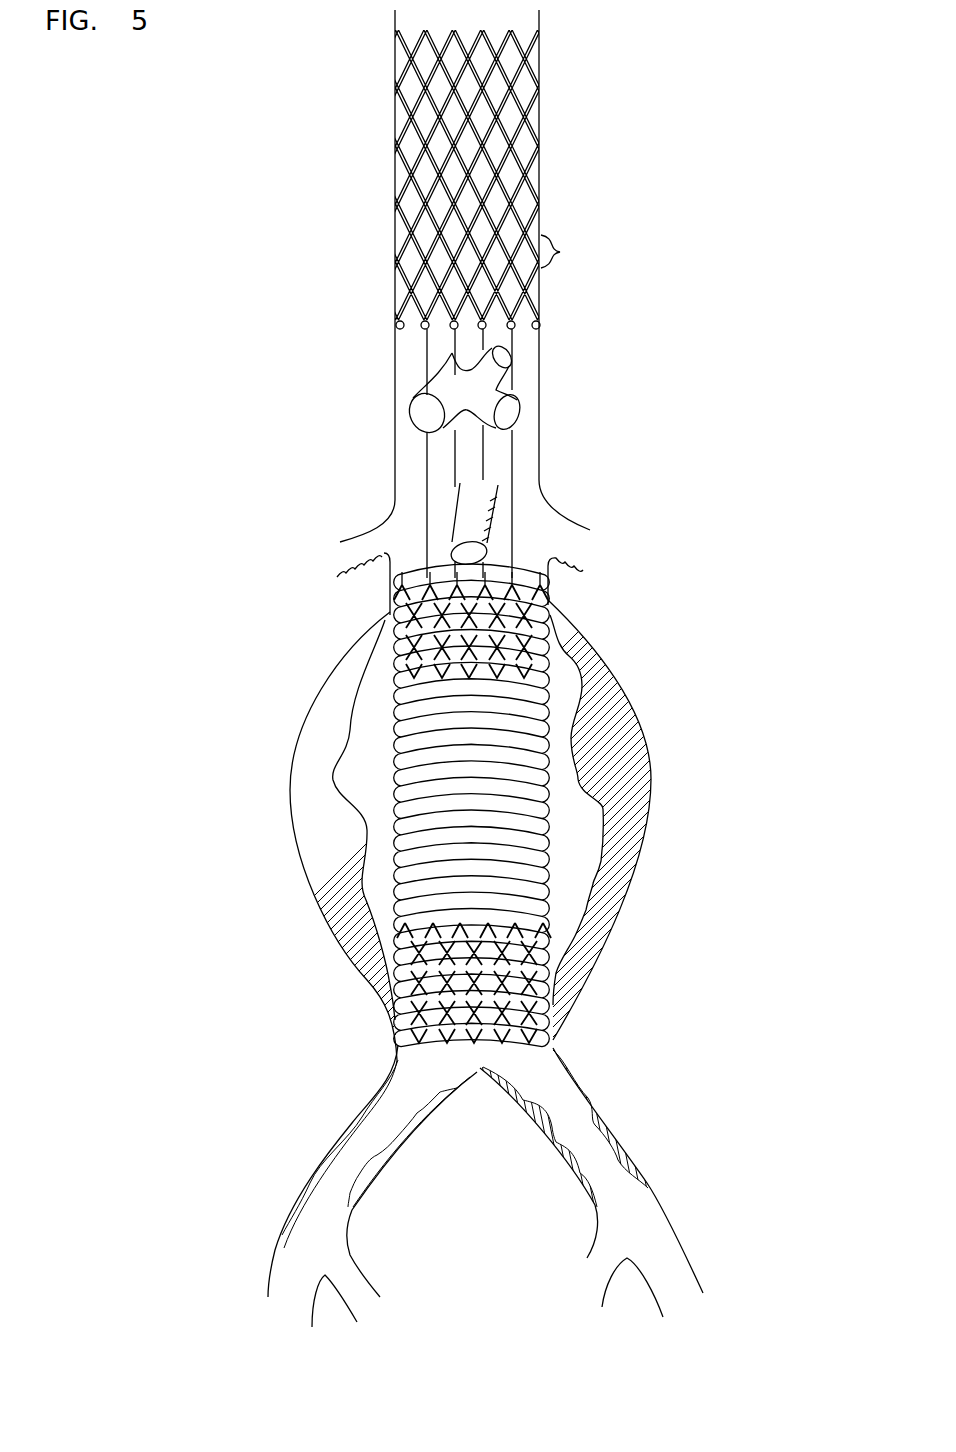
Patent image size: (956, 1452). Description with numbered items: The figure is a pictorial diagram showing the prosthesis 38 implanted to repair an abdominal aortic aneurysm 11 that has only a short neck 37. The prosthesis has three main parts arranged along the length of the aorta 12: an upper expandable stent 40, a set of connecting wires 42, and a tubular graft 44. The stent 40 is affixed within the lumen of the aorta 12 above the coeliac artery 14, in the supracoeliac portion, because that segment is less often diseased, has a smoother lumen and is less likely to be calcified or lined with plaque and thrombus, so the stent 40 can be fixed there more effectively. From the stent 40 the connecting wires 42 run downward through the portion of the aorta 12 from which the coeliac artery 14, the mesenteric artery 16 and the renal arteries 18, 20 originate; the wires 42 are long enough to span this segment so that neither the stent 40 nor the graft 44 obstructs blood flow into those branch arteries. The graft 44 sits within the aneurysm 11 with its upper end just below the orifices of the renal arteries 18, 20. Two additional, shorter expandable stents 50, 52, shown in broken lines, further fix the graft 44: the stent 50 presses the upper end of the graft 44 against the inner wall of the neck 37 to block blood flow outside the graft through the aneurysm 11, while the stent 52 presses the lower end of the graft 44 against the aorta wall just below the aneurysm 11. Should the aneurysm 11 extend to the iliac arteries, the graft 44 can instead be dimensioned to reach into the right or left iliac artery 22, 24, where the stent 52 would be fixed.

The abdominal aortic aneurysm 11 is at (292, 773).
The aorta 12 is at (343, 252).
The coeliac artery 14 is at (467, 369).
The mesenteric artery 16 is at (463, 512).
The renal artery 18 is at (569, 545).
The renal artery 20 is at (352, 550).
The right iliac artery 22 is at (583, 1095).
The left iliac artery 24 is at (350, 1125).
The neck 37 is at (549, 591).
The prosthesis 38 is at (562, 350).
The stent 40 is at (520, 147).
The connecting wires 42 is at (525, 445).
The graft 44 is at (522, 825).
The stent 50 is at (573, 641).
The stent 52 is at (533, 985).